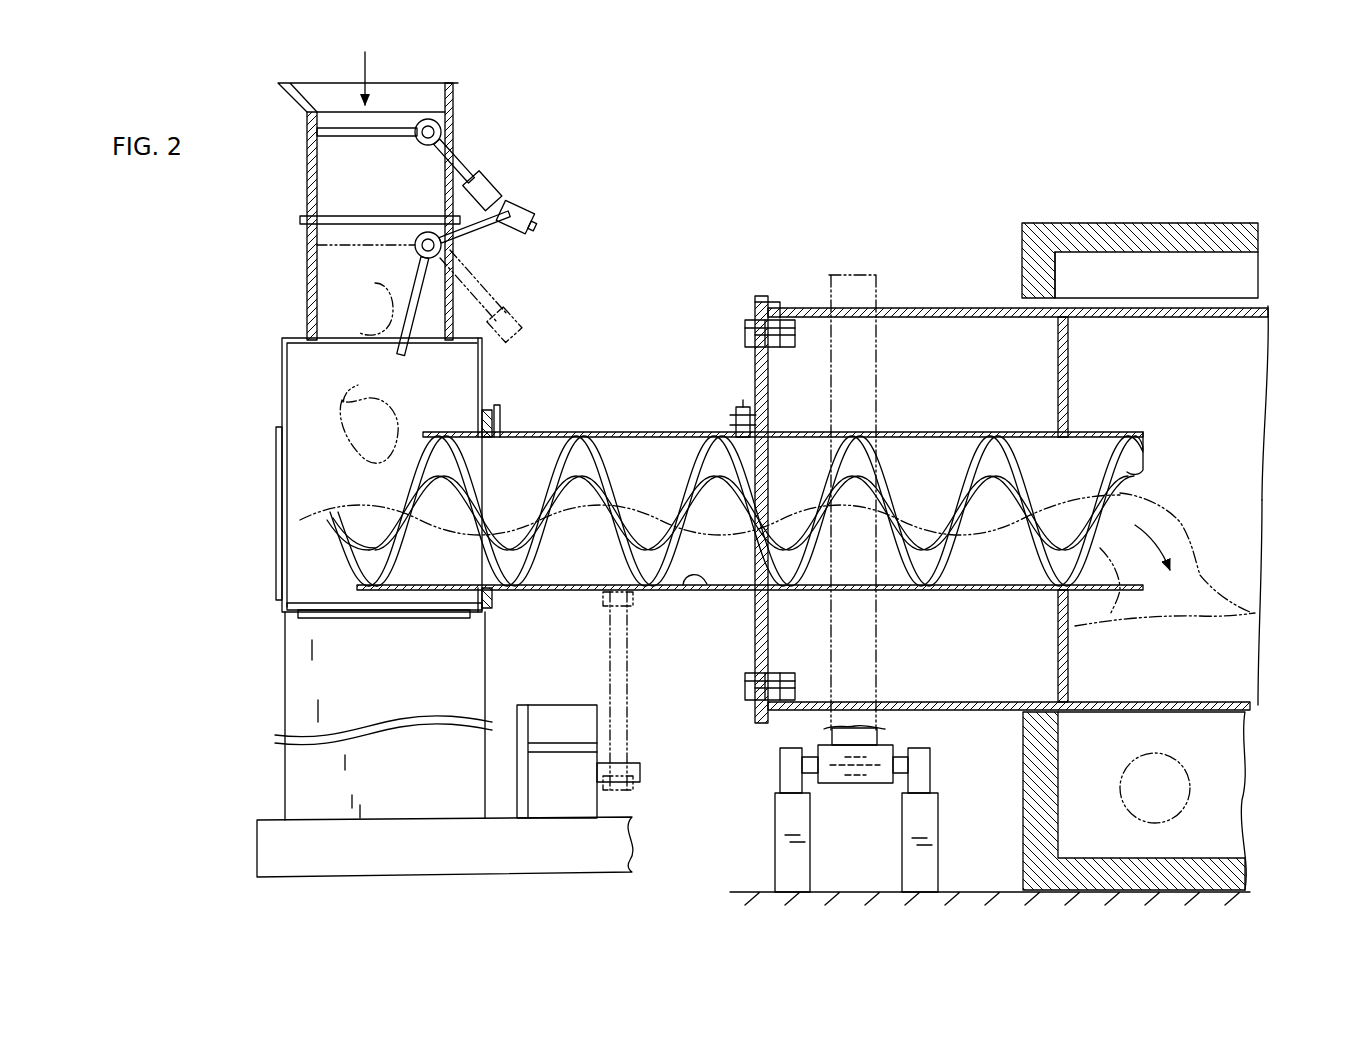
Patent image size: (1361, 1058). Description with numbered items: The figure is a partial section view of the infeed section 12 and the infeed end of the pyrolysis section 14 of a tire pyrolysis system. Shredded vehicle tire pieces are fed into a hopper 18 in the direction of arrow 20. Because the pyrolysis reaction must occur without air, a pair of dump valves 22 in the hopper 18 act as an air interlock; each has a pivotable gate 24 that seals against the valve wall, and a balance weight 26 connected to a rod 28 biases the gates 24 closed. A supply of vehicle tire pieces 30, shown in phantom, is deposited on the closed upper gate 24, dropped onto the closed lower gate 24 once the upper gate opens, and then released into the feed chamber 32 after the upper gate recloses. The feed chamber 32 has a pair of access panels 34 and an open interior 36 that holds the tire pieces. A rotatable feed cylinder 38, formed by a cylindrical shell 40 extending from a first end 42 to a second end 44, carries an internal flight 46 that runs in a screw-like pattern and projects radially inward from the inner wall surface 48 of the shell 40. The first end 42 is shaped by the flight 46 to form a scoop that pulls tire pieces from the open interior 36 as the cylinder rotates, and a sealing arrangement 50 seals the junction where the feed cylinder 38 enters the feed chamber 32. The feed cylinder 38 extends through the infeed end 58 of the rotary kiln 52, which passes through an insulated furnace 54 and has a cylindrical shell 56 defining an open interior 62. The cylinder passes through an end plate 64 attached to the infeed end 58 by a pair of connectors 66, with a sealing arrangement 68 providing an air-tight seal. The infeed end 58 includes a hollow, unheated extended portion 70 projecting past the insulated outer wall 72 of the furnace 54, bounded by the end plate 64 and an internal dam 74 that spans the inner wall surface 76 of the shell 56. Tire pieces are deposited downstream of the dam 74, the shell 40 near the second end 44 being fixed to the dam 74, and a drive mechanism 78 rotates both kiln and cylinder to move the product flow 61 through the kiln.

The infeed section 12 is at (618, 245).
The pyrolysis section 14 is at (1063, 495).
The hopper 18 is at (292, 90).
The arrow 20 is at (370, 74).
The dump valves 22 is at (307, 178).
The pivotable gate 24 is at (360, 138).
The balance weight 26 is at (497, 188).
The rod 28 is at (453, 153).
The vehicle tire pieces 30 is at (360, 373).
The feed chamber 32 is at (268, 393).
The access panels 34 is at (276, 548).
The open interior 36 is at (470, 395).
The feed cylinder 38 is at (658, 430).
The cylindrical shell 40 is at (945, 432).
The first end 42 is at (427, 436).
The second end 44 is at (1114, 430).
The internal flight 46 is at (590, 462).
The inner wall surface 48 is at (690, 598).
The sealing arrangement 50 is at (492, 606).
The rotary kiln 52 is at (887, 305).
The insulated furnace 54 is at (1135, 222).
The cylindrical shell 56 is at (1135, 308).
The infeed end 58 is at (777, 312).
The product flow 61 is at (1240, 653).
The open interior 62 is at (1240, 410).
The end plate 64 is at (752, 660).
The connectors 66 is at (748, 332).
The sealing arrangement 68 is at (746, 412).
The extended portion 70 is at (972, 705).
The insulated outer wall 72 is at (1018, 808).
The internal dam 74 is at (1070, 352).
The inner wall surface 76 is at (1180, 318).
The drive mechanism 78 is at (853, 790).